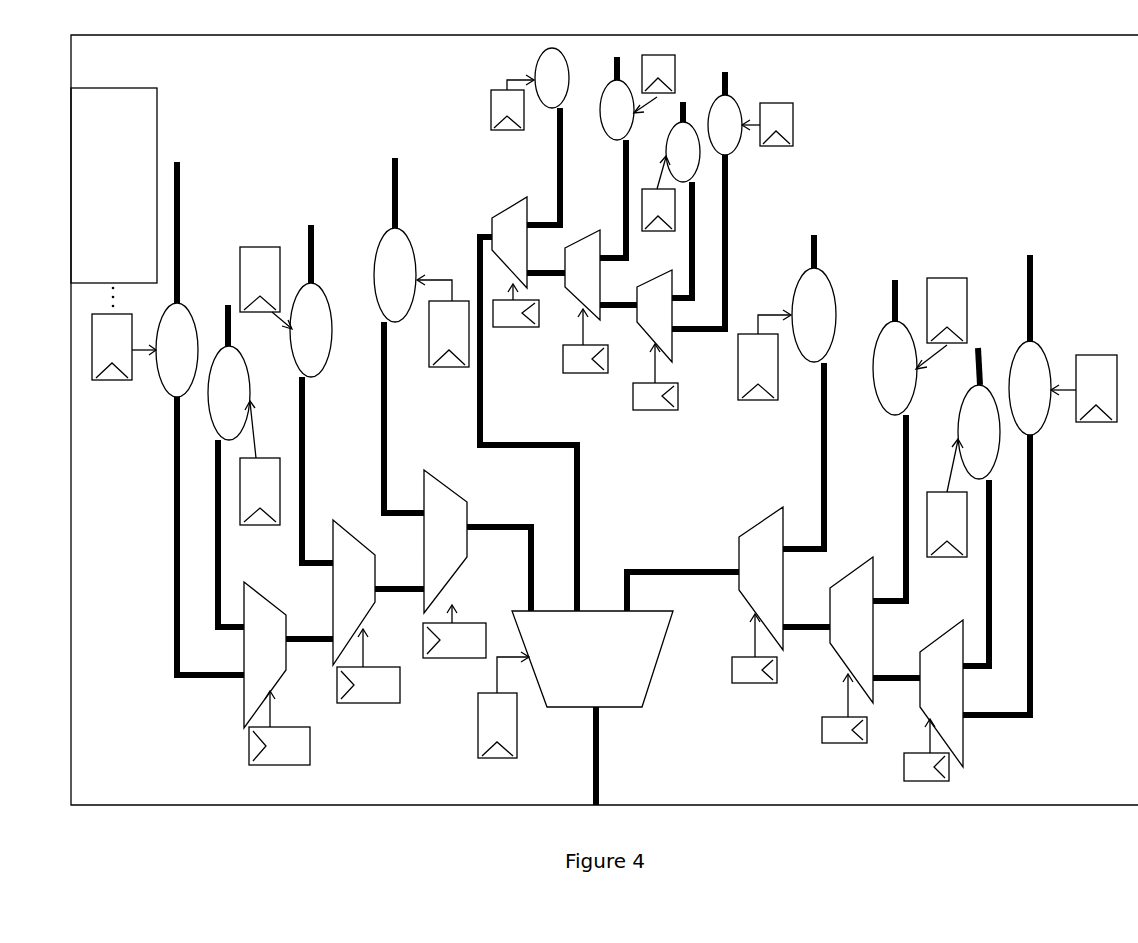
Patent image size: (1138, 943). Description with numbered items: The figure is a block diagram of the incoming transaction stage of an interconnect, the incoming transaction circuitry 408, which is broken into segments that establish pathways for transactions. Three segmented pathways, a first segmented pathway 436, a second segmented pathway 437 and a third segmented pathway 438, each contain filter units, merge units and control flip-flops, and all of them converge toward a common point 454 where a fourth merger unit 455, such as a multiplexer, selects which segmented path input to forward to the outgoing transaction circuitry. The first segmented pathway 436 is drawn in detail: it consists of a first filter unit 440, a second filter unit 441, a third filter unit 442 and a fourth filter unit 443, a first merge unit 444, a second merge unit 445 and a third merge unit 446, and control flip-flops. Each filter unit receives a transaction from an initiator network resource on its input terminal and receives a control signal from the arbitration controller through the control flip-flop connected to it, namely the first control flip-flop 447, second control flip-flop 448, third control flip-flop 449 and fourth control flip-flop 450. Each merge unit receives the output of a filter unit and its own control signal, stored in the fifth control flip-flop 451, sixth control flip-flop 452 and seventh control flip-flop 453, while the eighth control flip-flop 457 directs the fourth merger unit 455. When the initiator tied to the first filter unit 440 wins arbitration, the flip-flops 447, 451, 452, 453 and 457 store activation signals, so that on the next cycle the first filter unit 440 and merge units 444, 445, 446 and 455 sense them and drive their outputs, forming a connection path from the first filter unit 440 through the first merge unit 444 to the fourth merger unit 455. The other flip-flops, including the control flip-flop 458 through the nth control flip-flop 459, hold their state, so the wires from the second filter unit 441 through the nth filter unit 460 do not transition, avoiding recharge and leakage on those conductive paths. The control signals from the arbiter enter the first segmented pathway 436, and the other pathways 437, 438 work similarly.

The incoming transaction circuitry 408 is at (107, 764).
The first segmented pathway 436 is at (247, 115).
The second segmented pathway 437 is at (478, 80).
The third segmented pathway 438 is at (957, 218).
The first filter unit 440 is at (198, 306).
The second filter unit 441 is at (255, 381).
The third filter unit 442 is at (335, 306).
The fourth filter unit 443 is at (420, 257).
The first merge unit 444 is at (248, 651).
The second merge unit 445 is at (336, 596).
The third merge unit 446 is at (428, 539).
The first control flip-flop 447 is at (95, 354).
The second control flip-flop 448 is at (243, 284).
The third control flip-flop 449 is at (243, 499).
The fourth control flip-flop 450 is at (432, 337).
The fifth control flip-flop 451 is at (272, 756).
The sixth control flip-flop 452 is at (360, 695).
The seventh control flip-flop 453 is at (446, 651).
The common point 454 is at (615, 737).
The fourth merger unit 455 is at (573, 677).
The eighth control flip-flop 457 is at (480, 729).
The control flip-flop 458 is at (478, 118).
The nth control flip-flop 459 is at (1079, 390).
The nth filter unit 460 is at (1048, 342).